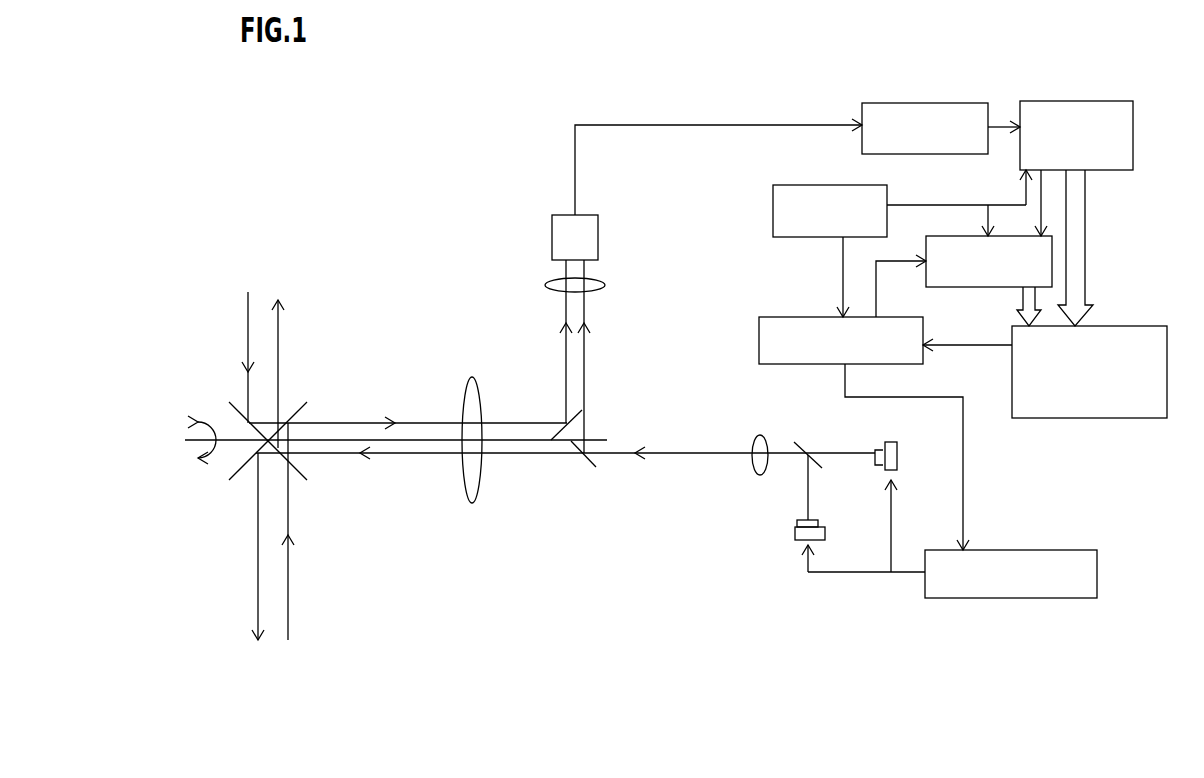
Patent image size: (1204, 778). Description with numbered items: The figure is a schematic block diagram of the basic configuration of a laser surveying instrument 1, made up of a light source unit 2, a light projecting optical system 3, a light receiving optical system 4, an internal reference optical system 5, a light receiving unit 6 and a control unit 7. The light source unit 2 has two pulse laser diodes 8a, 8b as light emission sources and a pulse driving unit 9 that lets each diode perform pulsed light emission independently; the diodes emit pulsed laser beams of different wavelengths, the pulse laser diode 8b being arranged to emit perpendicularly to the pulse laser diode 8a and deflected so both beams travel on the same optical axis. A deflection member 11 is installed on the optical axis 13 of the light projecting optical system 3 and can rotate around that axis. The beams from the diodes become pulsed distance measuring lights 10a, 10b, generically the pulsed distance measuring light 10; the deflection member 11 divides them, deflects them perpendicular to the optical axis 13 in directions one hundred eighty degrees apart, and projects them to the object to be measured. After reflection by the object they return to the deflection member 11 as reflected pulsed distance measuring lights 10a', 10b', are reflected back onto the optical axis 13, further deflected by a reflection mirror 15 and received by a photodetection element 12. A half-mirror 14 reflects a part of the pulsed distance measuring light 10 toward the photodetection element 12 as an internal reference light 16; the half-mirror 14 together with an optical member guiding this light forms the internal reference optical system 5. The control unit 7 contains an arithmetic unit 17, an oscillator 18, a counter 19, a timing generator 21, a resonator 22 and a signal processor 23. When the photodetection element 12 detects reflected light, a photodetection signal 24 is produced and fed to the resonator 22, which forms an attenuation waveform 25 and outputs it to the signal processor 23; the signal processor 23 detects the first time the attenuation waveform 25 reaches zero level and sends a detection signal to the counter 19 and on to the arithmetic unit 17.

The laser surveying instrument 1 is at (396, 100).
The light source unit 2 is at (840, 531).
The light projecting optical system 3 is at (593, 460).
The light receiving optical system 4 is at (550, 352).
The internal reference optical system 5 is at (601, 365).
The light receiving unit 6 is at (683, 216).
The control unit 7 is at (997, 102).
The pulse laser diode 8a is at (888, 440).
The pulse laser diode 8b is at (790, 533).
The pulse driving unit 9 is at (1057, 550).
The pulsed distance measuring light 10 is at (700, 456).
The pulsed distance measuring light 10a is at (317, 355).
The reflected pulsed distance measuring light 10a' is at (215, 343).
The pulsed distance measuring light 10b is at (232, 576).
The reflected pulsed distance measuring light 10b' is at (333, 561).
The deflection member 11 is at (318, 479).
The photodetection element 12 is at (598, 240).
The optical axis 13 is at (330, 443).
The half-mirror 14 is at (590, 463).
The reflection mirror 15 is at (585, 418).
The internal reference light 16 is at (583, 308).
The arithmetic unit 17 is at (1140, 326).
The oscillator 18 is at (780, 238).
The counter 19 is at (955, 290).
The timing generator 21 is at (759, 345).
The resonator 22 is at (935, 103).
The signal processor 23 is at (1078, 101).
The photodetection signal 24 is at (575, 170).
The attenuation waveform 25 is at (1003, 122).